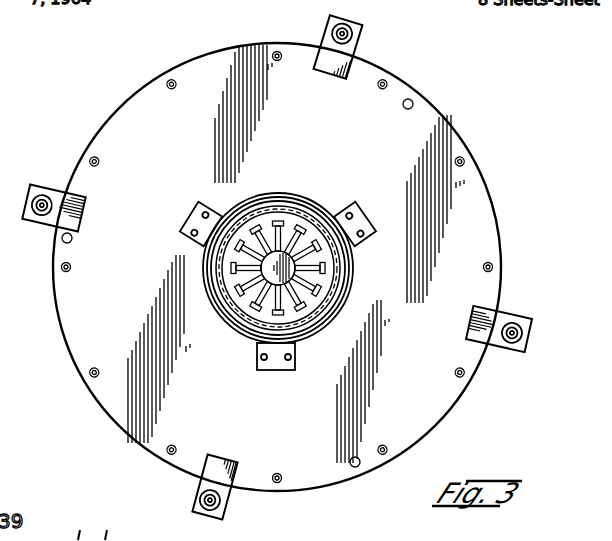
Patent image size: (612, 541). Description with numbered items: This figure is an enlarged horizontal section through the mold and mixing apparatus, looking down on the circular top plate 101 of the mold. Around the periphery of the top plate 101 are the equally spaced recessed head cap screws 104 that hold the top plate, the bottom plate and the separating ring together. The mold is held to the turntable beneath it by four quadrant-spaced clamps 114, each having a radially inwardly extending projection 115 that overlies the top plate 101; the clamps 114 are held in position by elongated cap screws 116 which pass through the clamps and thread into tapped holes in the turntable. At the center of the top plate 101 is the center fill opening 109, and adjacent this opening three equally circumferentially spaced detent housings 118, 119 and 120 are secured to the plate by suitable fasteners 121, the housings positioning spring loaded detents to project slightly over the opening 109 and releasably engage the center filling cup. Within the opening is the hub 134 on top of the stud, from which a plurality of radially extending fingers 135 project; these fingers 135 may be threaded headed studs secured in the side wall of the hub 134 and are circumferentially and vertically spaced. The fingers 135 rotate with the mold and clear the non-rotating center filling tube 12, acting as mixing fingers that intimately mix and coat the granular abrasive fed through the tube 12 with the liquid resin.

The top plate 101 is at (474, 221).
The recessed head cap screws 104 is at (467, 163).
The center fill opening 109 is at (343, 287).
The center filling tube 12 is at (313, 311).
The clamps 114 is at (343, 51).
The radially inwardly extending projections 115 is at (82, 213).
The elongated cap screws 116 is at (352, 32).
The detent housing 118 is at (283, 371).
The detent housing 119 is at (366, 221).
The detent housing 120 is at (196, 213).
The fasteners 121 is at (193, 236).
The hub 134 is at (292, 261).
The radially extending fingers 135 is at (284, 248).